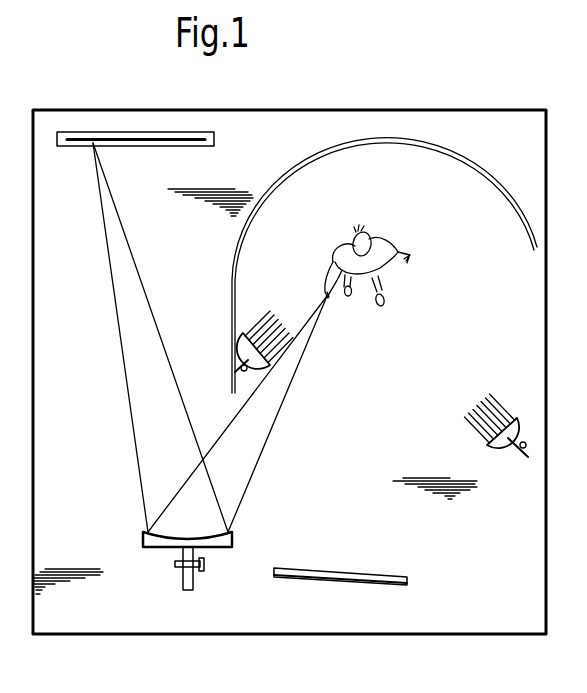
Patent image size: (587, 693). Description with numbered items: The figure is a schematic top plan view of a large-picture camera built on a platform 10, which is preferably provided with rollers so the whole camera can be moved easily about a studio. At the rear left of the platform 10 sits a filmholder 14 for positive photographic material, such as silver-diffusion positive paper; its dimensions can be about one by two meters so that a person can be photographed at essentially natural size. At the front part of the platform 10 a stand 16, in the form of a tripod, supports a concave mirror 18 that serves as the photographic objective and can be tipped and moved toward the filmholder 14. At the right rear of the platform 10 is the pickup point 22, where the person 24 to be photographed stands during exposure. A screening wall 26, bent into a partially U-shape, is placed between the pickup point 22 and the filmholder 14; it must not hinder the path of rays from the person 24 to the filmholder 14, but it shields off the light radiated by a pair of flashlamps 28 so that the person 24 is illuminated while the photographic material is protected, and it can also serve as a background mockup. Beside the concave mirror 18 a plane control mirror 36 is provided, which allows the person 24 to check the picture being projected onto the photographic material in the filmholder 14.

The platform 10 is at (70, 623).
The filmholder 14 is at (58, 147).
The stand 16 is at (186, 574).
The concave mirror 18 is at (145, 537).
The pickup point 22 is at (443, 297).
The person 24 is at (340, 257).
The screening wall 26 is at (232, 288).
The flashlamps 28 is at (258, 356).
The plane control mirror 36 is at (333, 577).